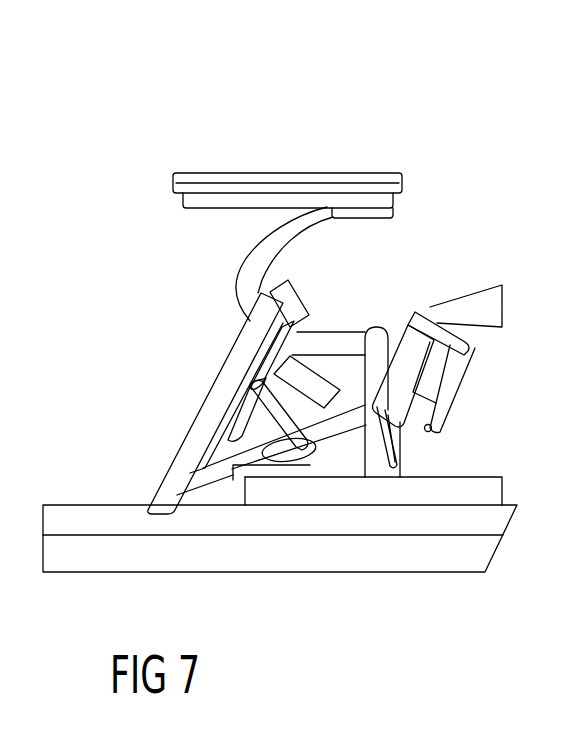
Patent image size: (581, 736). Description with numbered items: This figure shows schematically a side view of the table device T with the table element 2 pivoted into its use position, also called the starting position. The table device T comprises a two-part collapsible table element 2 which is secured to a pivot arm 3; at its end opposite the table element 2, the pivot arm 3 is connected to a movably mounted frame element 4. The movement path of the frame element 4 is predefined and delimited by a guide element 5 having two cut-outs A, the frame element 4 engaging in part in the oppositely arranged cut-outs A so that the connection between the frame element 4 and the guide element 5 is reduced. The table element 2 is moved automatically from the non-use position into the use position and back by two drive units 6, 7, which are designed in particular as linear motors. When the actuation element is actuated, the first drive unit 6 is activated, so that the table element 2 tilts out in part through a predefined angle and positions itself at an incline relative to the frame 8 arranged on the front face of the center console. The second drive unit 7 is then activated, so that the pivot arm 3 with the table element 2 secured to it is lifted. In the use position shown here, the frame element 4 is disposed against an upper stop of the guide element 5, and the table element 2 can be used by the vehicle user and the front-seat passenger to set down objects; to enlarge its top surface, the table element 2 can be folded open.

The table device T is at (424, 147).
The table element 2 is at (172, 181).
The pivot arm 3 is at (250, 278).
The frame element 4 is at (378, 343).
The guide element 5 is at (380, 467).
The first drive unit 6 is at (447, 361).
The second drive unit 7 is at (313, 443).
The frame 8 is at (200, 442).
The cut-outs A is at (433, 438).